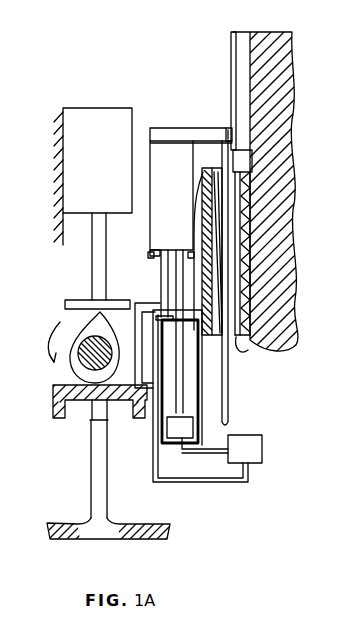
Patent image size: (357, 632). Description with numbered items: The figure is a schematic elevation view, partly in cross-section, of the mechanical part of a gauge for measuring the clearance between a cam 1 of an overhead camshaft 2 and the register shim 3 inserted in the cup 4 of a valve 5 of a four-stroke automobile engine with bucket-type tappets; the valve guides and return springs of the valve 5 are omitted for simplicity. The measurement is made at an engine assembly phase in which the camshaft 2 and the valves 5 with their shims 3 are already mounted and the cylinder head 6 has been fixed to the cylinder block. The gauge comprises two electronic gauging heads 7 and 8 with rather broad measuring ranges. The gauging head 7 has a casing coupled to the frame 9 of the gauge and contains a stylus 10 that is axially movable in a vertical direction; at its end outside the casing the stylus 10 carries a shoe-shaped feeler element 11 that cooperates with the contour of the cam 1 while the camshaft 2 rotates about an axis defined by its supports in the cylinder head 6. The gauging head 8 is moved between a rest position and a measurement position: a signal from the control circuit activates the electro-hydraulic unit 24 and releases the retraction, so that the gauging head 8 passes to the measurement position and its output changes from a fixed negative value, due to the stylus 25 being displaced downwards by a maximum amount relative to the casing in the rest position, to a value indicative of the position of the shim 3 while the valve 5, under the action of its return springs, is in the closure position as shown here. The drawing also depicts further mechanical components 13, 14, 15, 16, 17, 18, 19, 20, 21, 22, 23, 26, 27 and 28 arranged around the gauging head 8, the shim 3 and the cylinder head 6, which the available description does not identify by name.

The cam 1 is at (93, 326).
The overhead camshaft 2 is at (72, 368).
The register shim 3 is at (72, 388).
The cup 4 is at (53, 408).
The valve 5 is at (72, 454).
The cylinder head 6 is at (64, 522).
The electronic gauging head 7 is at (82, 120).
The electronic gauging head 8 is at (152, 156).
The frame 9 is at (60, 115).
The stylus 10 is at (95, 262).
The feeler element 11 is at (66, 300).
The cover plate 13 is at (170, 134).
The bracket 14 is at (228, 130).
The support bar 15 is at (231, 44).
The wall 16 is at (284, 42).
The guide rod 17 is at (227, 390).
The sleeve end 18 is at (240, 346).
The measuring rod 19 is at (184, 369).
The sensor housing 20 is at (185, 415).
The sensor 21 is at (170, 448).
The holder 22 is at (158, 481).
The lead wire 23 is at (202, 452).
The electro-hydraulic unit 24 is at (256, 451).
The stylus 25 is at (162, 289).
The bracket 26 is at (146, 388).
The seal 27 is at (152, 253).
The lead 28 is at (200, 173).